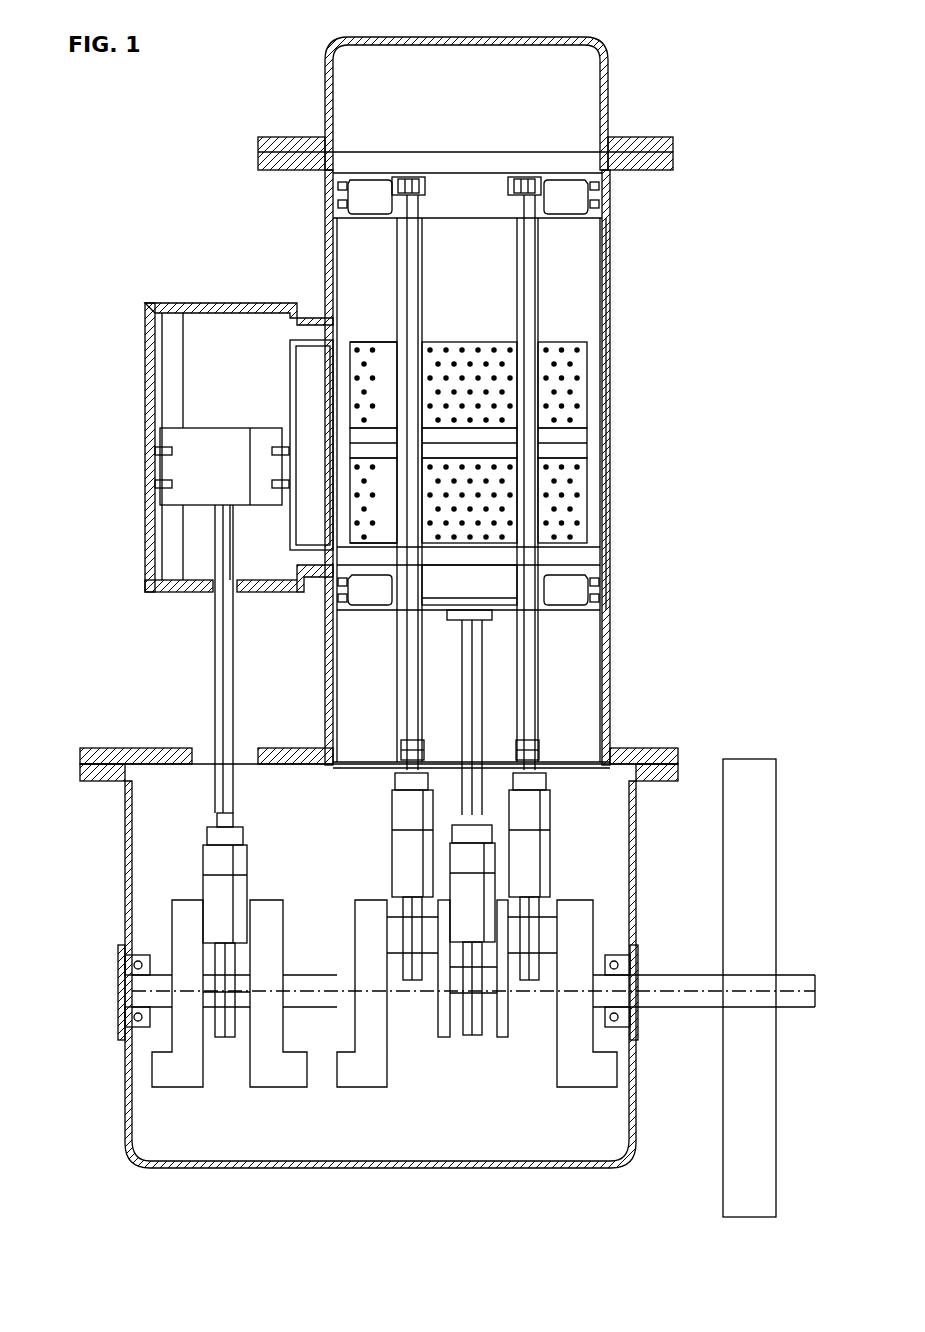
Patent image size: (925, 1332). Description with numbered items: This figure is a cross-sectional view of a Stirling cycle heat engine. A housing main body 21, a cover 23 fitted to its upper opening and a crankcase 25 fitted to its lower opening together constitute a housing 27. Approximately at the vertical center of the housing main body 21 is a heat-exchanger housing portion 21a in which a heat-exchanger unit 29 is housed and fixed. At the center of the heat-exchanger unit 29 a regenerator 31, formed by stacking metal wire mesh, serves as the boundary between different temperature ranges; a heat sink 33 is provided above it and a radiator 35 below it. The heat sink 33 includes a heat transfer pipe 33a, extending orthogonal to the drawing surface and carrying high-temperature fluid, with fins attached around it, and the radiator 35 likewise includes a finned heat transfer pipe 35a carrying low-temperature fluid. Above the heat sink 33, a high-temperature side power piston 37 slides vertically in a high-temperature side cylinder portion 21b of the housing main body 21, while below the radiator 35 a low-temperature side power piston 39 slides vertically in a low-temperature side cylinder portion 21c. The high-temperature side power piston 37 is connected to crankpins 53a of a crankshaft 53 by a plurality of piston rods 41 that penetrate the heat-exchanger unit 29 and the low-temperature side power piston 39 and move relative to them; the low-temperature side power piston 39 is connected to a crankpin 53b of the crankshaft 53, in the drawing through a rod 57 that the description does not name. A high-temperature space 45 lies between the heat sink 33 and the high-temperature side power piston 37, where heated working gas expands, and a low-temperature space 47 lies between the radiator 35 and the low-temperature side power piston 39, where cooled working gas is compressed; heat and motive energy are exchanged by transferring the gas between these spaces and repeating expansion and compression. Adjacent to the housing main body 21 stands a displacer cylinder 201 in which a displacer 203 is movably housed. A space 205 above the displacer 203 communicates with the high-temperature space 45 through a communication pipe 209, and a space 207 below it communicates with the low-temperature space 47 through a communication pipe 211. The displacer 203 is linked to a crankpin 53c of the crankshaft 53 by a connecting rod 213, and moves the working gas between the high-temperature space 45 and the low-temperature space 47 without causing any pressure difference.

The housing main body 21 is at (548, 469).
The heat-exchanger housing portion 21a is at (610, 445).
The high-temperature side cylinder portion 21b is at (610, 305).
The low-temperature side cylinder portion 21c is at (661, 534).
The cover 23 is at (440, 37).
The crankcase 25 is at (465, 1170).
The housing 27 is at (611, 241).
The heat-exchanger unit 29 is at (309, 425).
The regenerator 31 is at (352, 433).
The heat sink 33 is at (352, 368).
The heat transfer pipe 33a is at (353, 348).
The radiator 35 is at (352, 480).
The heat transfer pipe 35a is at (352, 522).
The high-temperature side power piston 37 is at (566, 197).
The low-temperature side power piston 39 is at (587, 608).
The piston rods 41 is at (418, 262).
The high-temperature space 45 is at (592, 278).
The low-temperature space 47 is at (565, 568).
The crankshaft 53 is at (473, 1027).
The crankpins 53a is at (395, 935).
The crankpin 53b is at (487, 1003).
The crankpin 53c is at (243, 997).
The power piston rod 57 is at (470, 716).
The displacer cylinder 201 is at (157, 451).
The displacer 203 is at (157, 486).
The space 205 is at (195, 303).
The space 207 is at (180, 592).
The communication pipe 209 is at (303, 340).
The communication pipe 211 is at (320, 568).
The connecting rod 213 is at (215, 698).